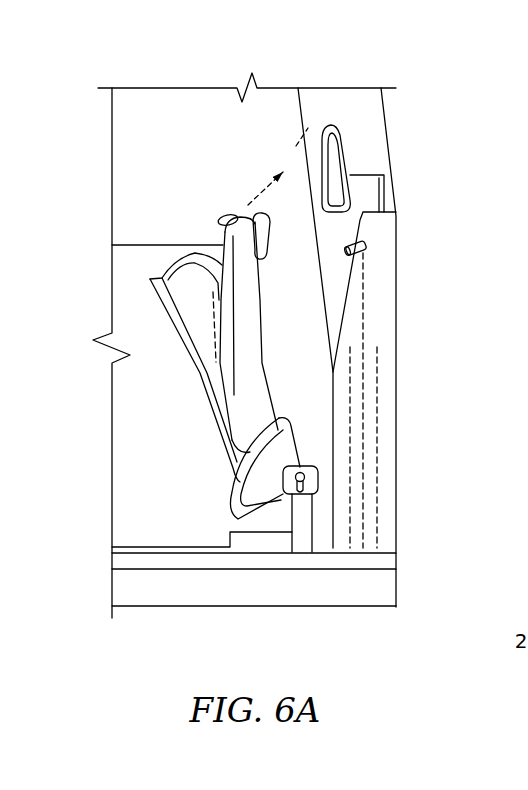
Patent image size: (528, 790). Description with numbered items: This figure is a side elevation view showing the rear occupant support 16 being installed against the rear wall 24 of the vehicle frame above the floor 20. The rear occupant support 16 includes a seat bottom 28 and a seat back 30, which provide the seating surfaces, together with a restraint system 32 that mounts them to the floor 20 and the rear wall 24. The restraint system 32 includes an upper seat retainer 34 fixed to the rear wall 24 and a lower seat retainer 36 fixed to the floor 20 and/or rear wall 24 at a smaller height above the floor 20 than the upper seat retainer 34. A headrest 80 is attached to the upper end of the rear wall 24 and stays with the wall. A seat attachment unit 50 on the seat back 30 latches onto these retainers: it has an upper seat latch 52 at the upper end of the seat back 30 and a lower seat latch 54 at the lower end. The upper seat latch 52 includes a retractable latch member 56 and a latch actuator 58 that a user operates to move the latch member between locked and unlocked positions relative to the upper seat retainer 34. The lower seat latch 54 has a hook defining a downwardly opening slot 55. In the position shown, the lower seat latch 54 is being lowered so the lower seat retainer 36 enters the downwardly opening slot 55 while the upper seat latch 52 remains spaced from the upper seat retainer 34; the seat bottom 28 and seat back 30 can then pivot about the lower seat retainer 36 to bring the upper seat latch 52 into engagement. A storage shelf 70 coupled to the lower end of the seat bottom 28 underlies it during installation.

The rear occupant support 16 is at (205, 234).
The floor 20 is at (200, 547).
The rear wall 24 is at (377, 322).
The seat bottom 28 is at (185, 358).
The seat back 30 is at (263, 338).
The restraint system 32 is at (362, 202).
The upper seat retainer 34 is at (365, 232).
The lower seat retainer 36 is at (321, 487).
The seat attachment unit 50 is at (503, 363).
The upper seat latch 52 is at (276, 220).
The lower seat latch 54 is at (313, 447).
The downwardly opening slot 55 is at (306, 488).
The retractable latch member 56 is at (278, 243).
The latch actuator 58 is at (234, 208).
The storage shelf 70 is at (258, 555).
The headrest 80 is at (346, 135).